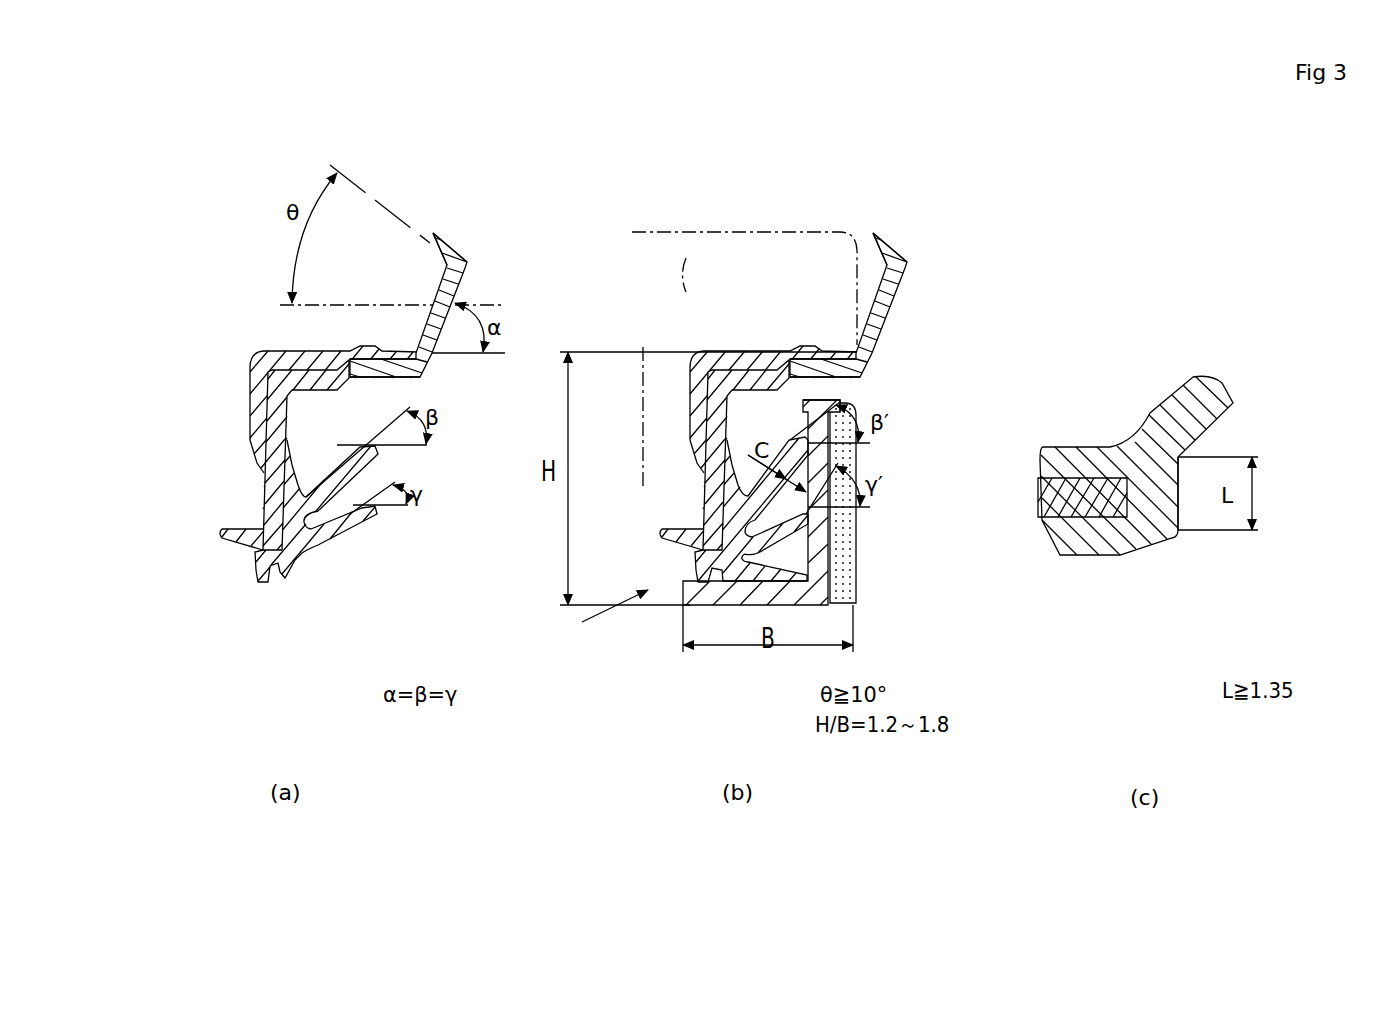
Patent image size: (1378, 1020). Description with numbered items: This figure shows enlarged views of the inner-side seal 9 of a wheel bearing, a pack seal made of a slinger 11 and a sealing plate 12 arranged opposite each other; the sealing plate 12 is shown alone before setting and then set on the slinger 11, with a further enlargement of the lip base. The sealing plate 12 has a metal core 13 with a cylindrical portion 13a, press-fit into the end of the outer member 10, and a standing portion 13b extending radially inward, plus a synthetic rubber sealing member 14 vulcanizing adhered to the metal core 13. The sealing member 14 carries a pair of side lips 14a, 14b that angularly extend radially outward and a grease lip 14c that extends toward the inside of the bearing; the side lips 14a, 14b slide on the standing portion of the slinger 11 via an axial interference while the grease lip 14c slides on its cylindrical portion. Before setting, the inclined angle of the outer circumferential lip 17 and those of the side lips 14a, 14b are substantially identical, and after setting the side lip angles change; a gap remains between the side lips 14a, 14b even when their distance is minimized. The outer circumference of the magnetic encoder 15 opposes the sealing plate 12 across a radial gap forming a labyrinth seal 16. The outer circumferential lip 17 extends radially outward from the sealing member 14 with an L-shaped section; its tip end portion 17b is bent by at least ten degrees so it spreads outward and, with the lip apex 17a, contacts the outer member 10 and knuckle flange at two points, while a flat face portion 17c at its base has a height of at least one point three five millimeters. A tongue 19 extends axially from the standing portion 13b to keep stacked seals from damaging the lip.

The inner-side seal 9 is at (574, 641).
The outer member 10 is at (703, 256).
The slinger 11 is at (910, 592).
The sealing plate 12 is at (118, 357).
The metal core 13 is at (176, 335).
The cylindrical portion 13a is at (305, 357).
The standing portion 13b is at (262, 400).
The sealing member 14 is at (176, 440).
The side lip 14a is at (350, 455).
The side lip 14b is at (322, 490).
The grease lip 14c is at (257, 540).
The magnetic encoder 15 is at (857, 457).
The labyrinth seal 16 is at (848, 404).
The outer circumferential lip 17 is at (466, 248).
The lip apex 17a is at (470, 261).
The tip end portion 17b is at (435, 243).
The flat face portion 17c is at (425, 376).
The tongue 19 is at (220, 540).